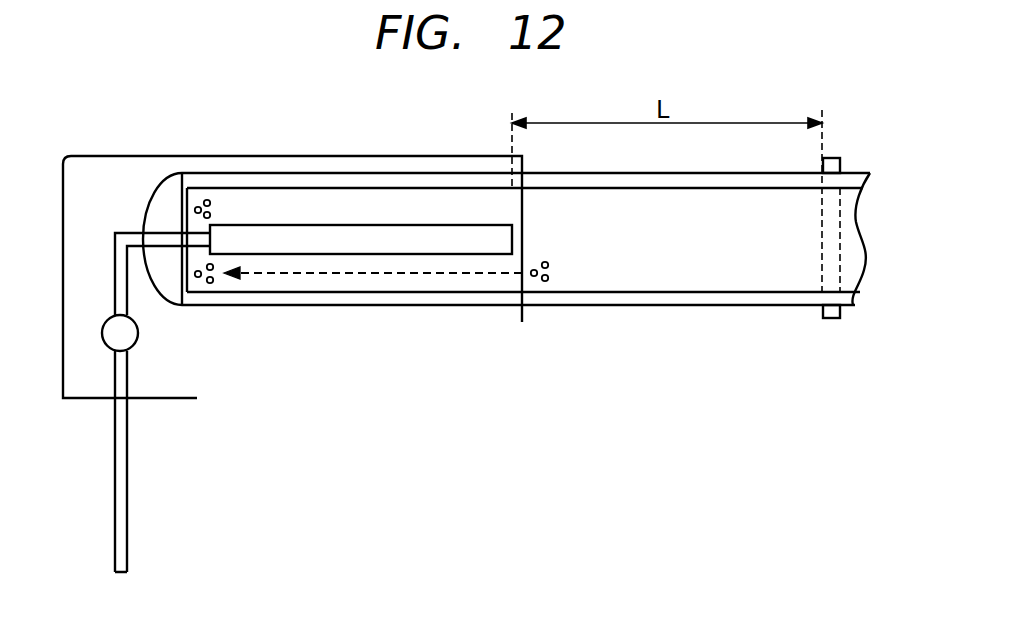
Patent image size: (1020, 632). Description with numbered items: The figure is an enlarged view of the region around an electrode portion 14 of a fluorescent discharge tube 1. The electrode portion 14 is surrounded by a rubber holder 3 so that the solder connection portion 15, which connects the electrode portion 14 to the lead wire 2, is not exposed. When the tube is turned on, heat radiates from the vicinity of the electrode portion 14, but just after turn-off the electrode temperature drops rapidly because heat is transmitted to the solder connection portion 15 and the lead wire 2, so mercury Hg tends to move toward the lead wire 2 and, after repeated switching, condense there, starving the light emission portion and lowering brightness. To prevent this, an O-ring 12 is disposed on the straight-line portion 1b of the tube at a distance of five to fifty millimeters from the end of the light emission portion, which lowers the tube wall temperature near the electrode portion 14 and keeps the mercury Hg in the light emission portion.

The fluorescent discharge tube 1 is at (486, 337).
The straight-line portion 1b is at (722, 320).
The lead wire 2 is at (122, 530).
The rubber holder 3 is at (112, 170).
The O-ring 12 is at (832, 318).
The electrode portion 14 is at (345, 233).
The solder connection portion 15 is at (130, 342).
The mercury Hg is at (205, 286).